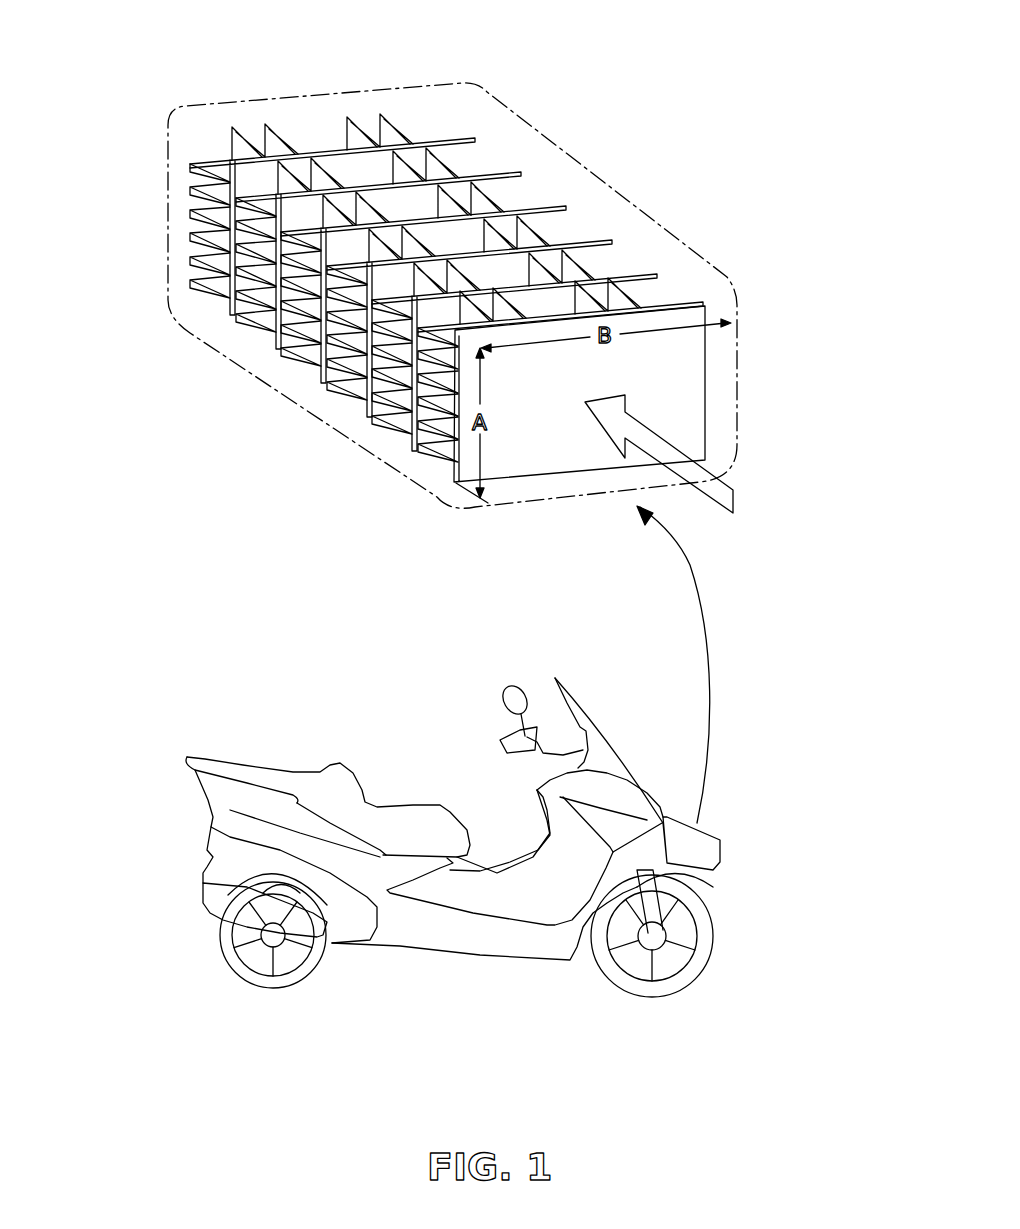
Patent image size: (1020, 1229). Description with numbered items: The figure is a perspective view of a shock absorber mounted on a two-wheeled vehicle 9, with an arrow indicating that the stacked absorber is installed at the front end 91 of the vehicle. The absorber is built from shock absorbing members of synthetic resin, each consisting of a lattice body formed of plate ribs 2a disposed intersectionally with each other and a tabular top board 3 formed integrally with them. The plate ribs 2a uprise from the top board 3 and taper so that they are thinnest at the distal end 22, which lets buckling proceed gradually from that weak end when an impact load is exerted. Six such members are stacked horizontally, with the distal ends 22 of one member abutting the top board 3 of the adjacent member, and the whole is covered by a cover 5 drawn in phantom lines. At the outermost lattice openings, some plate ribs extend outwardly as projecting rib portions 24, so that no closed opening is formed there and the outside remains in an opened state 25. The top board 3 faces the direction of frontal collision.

The distal end 22 is at (462, 259).
The top board 3 is at (188, 212).
The plate ribs 2a is at (247, 323).
The projecting rib portions 24 is at (333, 157).
The opened state 25 is at (478, 192).
The cover 5 is at (693, 247).
The two-wheeled vehicle 9 is at (482, 937).
The front end 91 is at (680, 837).